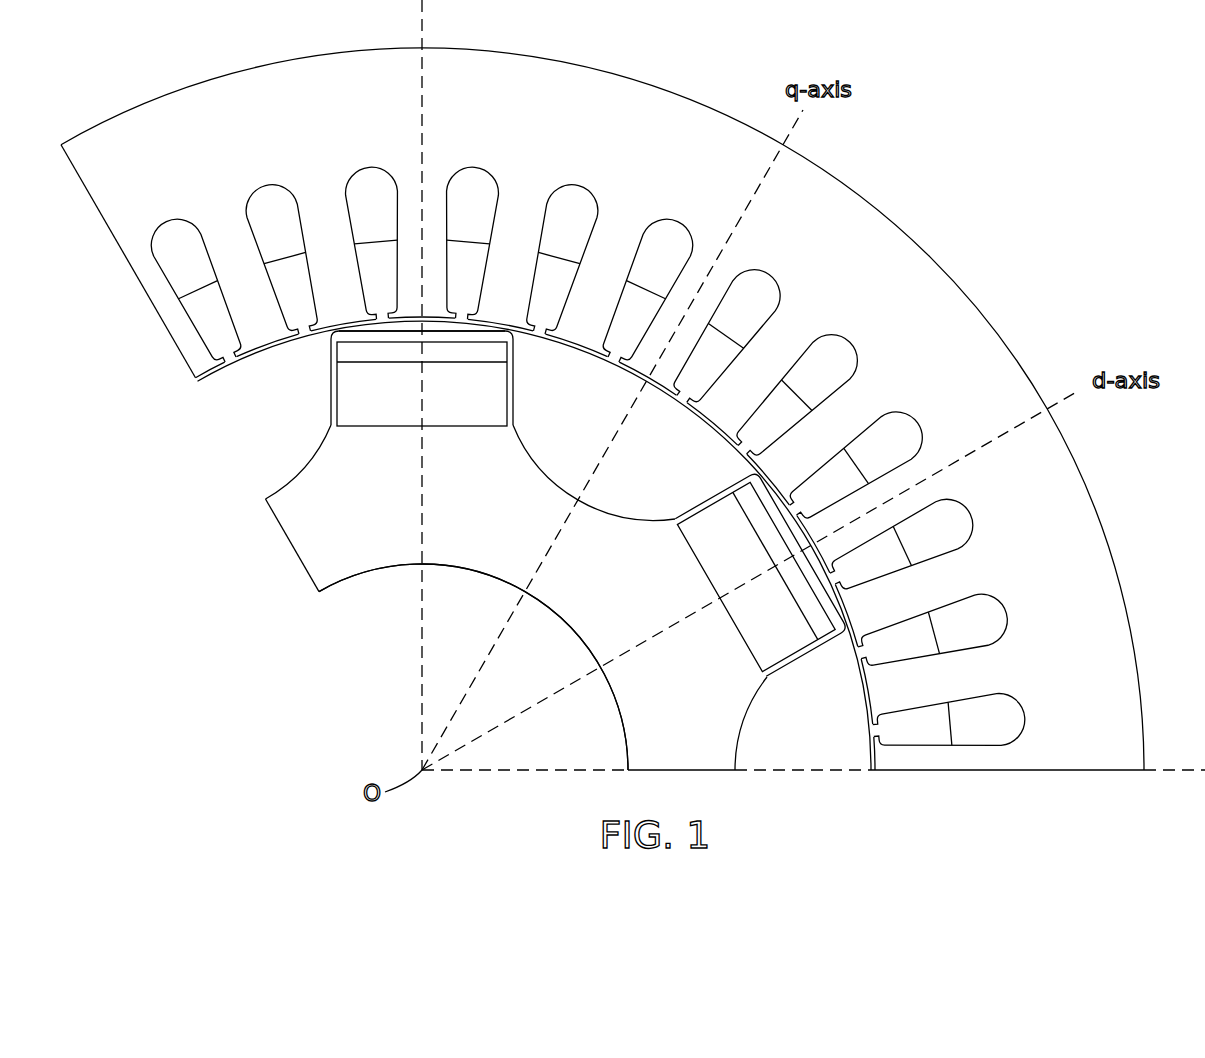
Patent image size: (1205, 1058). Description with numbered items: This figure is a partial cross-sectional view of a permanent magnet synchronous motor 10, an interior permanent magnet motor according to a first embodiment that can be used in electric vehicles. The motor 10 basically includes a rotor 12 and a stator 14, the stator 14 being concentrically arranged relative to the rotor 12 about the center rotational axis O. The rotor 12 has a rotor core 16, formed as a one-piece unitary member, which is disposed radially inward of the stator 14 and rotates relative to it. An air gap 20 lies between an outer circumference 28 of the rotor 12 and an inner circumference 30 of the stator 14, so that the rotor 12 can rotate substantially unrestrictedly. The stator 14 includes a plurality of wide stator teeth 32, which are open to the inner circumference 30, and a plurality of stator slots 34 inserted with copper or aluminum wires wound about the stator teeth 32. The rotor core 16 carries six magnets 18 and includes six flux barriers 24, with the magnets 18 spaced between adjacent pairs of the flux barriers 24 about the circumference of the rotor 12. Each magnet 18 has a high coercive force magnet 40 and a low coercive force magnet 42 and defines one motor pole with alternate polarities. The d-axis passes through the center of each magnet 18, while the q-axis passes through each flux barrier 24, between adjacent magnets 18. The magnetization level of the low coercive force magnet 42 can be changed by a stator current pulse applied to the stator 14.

The permanent magnet synchronous motor 10 is at (1050, 165).
The rotor 12 is at (698, 718).
The stator 14 is at (173, 153).
The rotor core 16 is at (640, 678).
The magnets 18 is at (377, 442).
The air gap 20 is at (322, 333).
The flux barriers 24 is at (232, 438).
The outer circumference 28 is at (342, 323).
The inner circumference 30 is at (208, 373).
The stator teeth 32 is at (435, 210).
The stator slots 34 is at (170, 265).
The high coercive force magnet 40 is at (352, 352).
The low coercive force magnet 42 is at (365, 397).